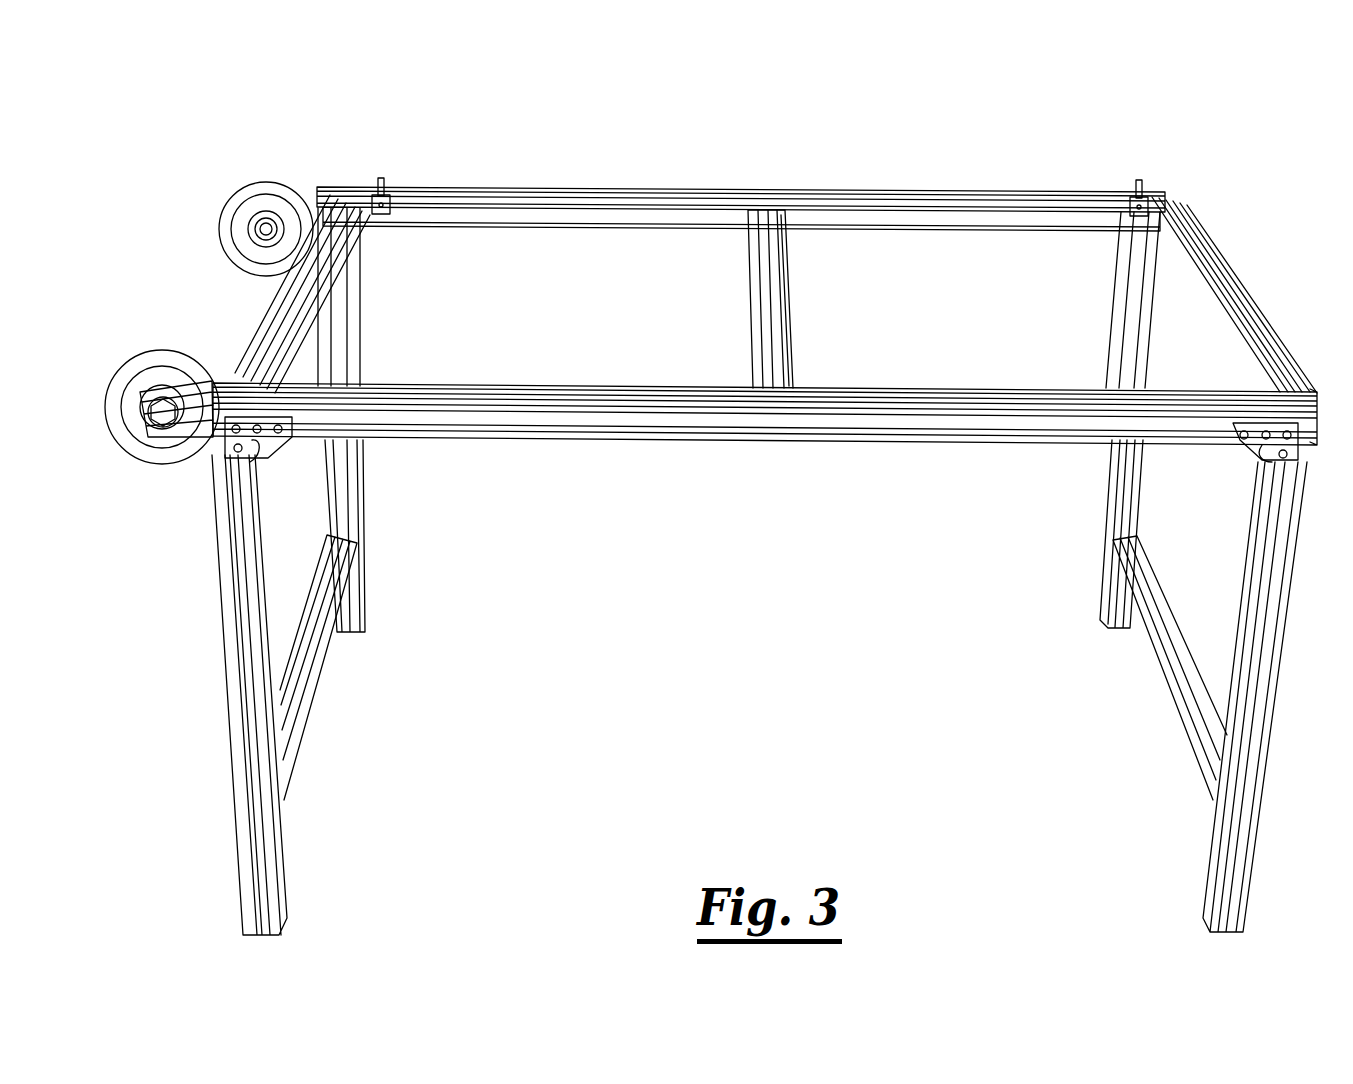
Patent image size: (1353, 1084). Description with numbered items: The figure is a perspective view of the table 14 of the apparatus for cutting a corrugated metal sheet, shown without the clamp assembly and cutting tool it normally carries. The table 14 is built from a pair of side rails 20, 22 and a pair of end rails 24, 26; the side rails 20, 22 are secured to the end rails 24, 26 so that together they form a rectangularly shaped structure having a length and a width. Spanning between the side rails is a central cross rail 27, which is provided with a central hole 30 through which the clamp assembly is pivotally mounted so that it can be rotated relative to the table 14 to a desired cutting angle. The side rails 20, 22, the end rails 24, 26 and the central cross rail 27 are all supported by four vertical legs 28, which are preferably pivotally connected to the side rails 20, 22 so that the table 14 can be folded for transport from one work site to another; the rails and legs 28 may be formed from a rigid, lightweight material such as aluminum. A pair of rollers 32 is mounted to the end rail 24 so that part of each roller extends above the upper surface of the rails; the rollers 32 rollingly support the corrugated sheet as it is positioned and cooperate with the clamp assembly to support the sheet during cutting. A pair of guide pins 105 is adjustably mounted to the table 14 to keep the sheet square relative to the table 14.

The table 14 is at (498, 126).
The side rail 20 is at (668, 438).
The side rail 22 is at (672, 186).
The end rail 24 is at (285, 298).
The end rail 26 is at (1232, 279).
The central cross rail 27 is at (792, 343).
The vertical legs 28 is at (362, 478).
The central hole 30 is at (764, 291).
The rollers 32 is at (220, 222).
The guide pins 105 is at (378, 180).